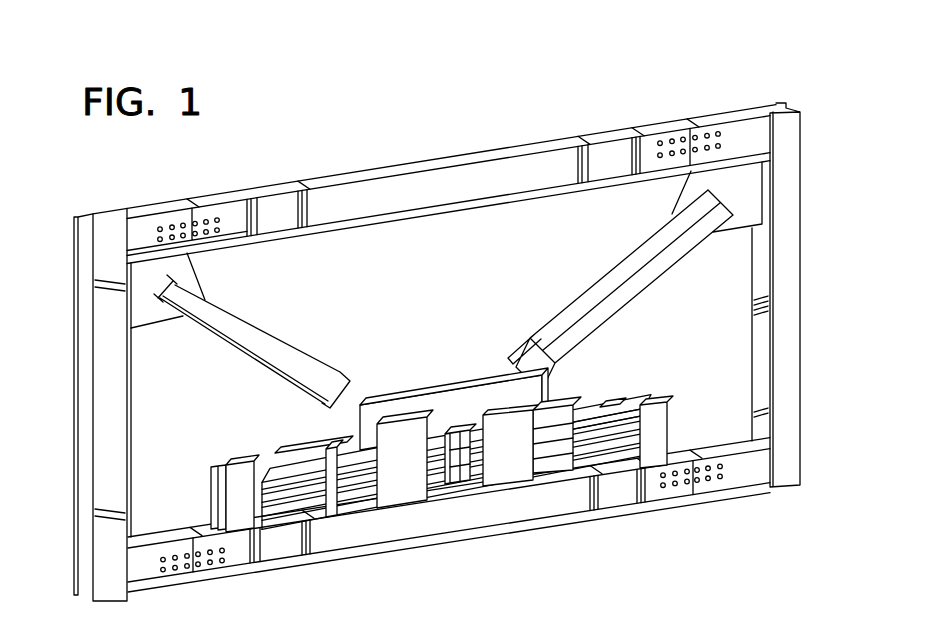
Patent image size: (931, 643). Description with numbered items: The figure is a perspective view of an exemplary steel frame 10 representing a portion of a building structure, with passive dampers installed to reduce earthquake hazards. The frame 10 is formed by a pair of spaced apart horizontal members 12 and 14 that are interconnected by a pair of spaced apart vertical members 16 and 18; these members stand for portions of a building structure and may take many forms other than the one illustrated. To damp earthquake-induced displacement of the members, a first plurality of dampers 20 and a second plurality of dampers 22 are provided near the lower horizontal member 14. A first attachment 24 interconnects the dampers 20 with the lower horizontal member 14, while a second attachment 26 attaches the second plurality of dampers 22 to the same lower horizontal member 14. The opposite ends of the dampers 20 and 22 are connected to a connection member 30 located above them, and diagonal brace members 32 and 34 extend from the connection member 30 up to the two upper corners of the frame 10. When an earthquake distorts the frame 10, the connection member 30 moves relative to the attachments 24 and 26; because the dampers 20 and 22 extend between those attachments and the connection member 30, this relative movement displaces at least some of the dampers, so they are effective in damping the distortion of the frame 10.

The steel frame 10 is at (437, 352).
The horizontal member 12 is at (432, 162).
The lower horizontal member 14 is at (481, 513).
The vertical member 16 is at (73, 372).
The vertical member 18 is at (790, 317).
The first plurality of dampers 20 is at (353, 503).
The second plurality of dampers 22 is at (603, 457).
The first attachment 24 is at (243, 487).
The second attachment 26 is at (657, 418).
The connection member 30 is at (447, 403).
The diagonal brace member 32 is at (275, 353).
The diagonal brace member 34 is at (593, 300).